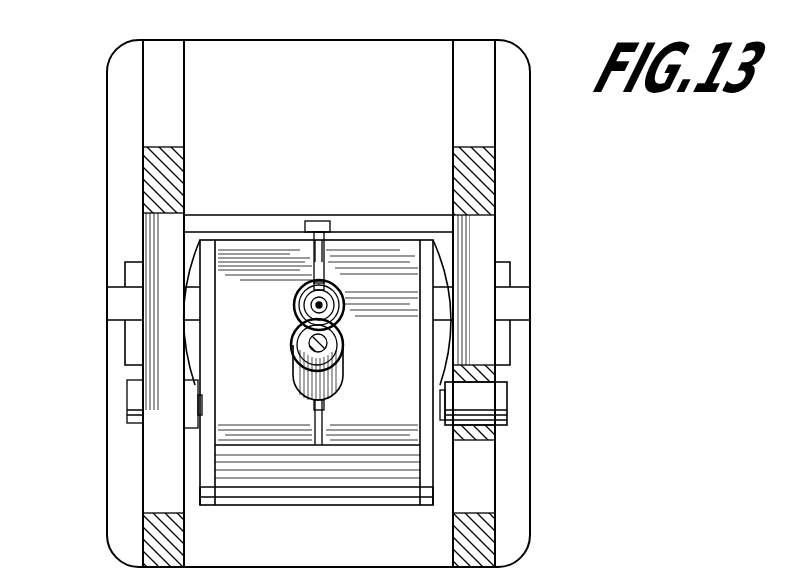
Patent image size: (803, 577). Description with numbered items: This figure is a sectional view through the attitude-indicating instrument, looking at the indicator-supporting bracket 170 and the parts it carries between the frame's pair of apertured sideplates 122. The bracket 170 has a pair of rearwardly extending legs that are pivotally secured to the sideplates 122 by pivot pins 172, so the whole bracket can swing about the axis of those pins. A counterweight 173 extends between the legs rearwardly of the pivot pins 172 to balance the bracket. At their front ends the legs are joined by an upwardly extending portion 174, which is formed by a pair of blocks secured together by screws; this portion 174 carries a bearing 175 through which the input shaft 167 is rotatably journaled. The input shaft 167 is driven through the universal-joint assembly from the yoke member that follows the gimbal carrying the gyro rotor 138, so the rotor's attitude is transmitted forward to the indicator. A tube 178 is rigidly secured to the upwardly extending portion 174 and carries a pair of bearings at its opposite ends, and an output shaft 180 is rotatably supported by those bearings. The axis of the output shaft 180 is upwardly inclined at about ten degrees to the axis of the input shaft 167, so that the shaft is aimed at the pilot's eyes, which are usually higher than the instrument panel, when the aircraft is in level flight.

The sideplates 122 is at (143, 163).
The gyro rotor 138 is at (445, 230).
The input shaft 167 is at (330, 292).
The indicator-supporting bracket 170 is at (210, 490).
The pivot pins 172 is at (190, 380).
The counterweight 173 is at (318, 505).
The upwardly extending portion 174 is at (402, 401).
The bearing 175 is at (294, 300).
The tube 178 is at (296, 352).
The output shaft 180 is at (345, 333).